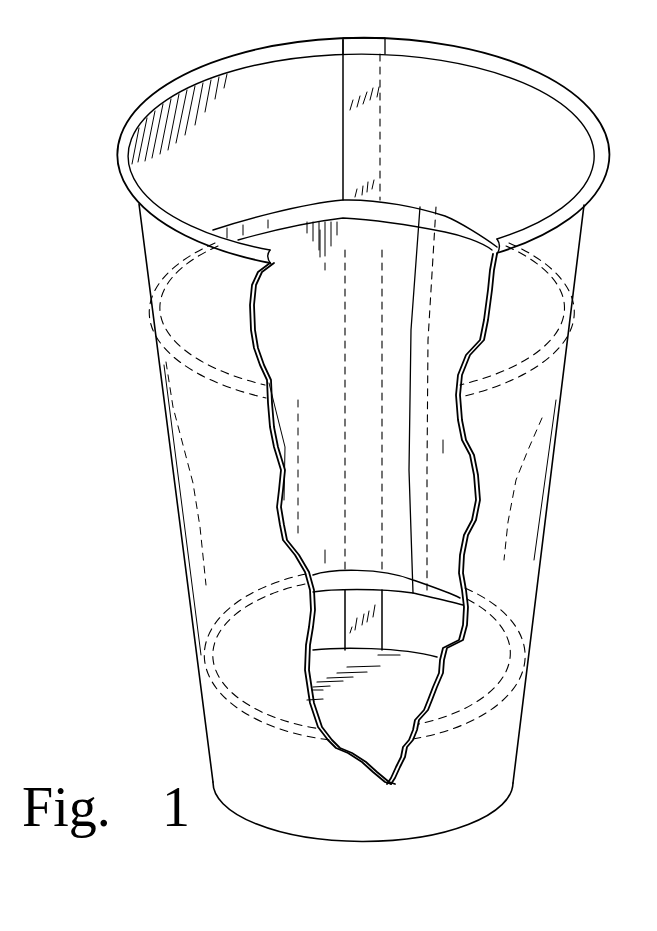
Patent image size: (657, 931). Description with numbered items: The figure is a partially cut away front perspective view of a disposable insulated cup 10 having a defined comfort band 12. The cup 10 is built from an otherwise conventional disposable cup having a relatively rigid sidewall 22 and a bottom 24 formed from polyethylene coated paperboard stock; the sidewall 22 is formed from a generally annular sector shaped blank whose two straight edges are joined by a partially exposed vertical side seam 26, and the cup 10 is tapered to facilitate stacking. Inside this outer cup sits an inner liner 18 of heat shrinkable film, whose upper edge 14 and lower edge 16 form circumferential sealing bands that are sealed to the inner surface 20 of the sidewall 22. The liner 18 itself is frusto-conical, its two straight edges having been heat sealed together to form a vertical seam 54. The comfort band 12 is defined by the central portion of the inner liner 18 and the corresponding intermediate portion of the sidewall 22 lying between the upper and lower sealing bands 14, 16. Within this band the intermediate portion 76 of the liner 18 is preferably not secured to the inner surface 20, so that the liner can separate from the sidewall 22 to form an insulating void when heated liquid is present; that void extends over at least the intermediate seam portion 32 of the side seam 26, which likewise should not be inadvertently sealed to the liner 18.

The disposable insulated cup 10 is at (144, 74).
The comfort band 12 is at (597, 337).
The upper edge 14 is at (470, 226).
The lower edge 16 is at (330, 580).
The inner liner 18 is at (331, 366).
The inner surface 20 is at (290, 152).
The sidewall 22 is at (187, 437).
The bottom 24 is at (390, 731).
The vertical side seam 26 is at (372, 118).
The intermediate seam portion 32 is at (360, 295).
The vertical seam 54 is at (428, 212).
The intermediate portion 76 is at (430, 293).